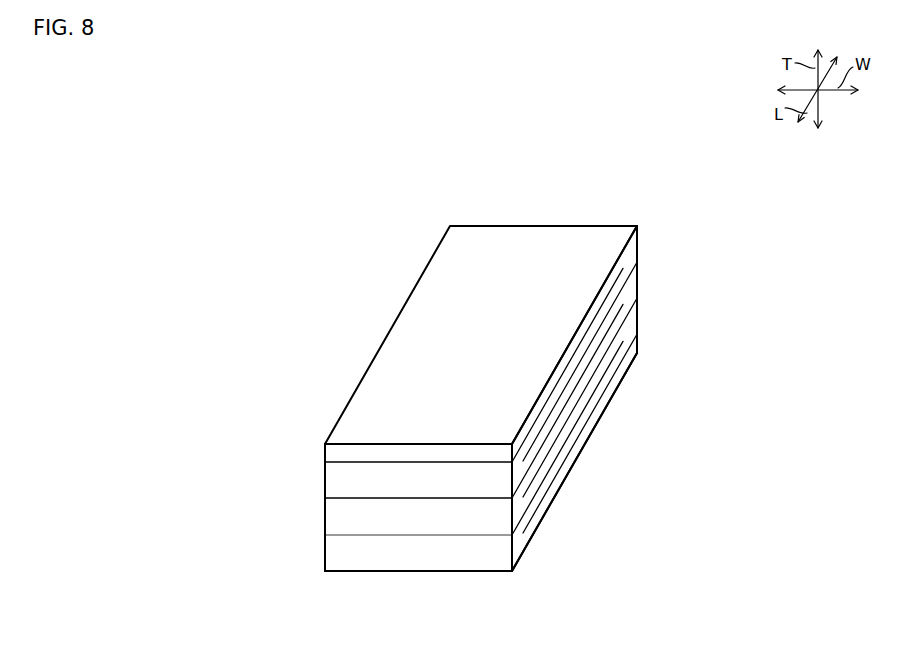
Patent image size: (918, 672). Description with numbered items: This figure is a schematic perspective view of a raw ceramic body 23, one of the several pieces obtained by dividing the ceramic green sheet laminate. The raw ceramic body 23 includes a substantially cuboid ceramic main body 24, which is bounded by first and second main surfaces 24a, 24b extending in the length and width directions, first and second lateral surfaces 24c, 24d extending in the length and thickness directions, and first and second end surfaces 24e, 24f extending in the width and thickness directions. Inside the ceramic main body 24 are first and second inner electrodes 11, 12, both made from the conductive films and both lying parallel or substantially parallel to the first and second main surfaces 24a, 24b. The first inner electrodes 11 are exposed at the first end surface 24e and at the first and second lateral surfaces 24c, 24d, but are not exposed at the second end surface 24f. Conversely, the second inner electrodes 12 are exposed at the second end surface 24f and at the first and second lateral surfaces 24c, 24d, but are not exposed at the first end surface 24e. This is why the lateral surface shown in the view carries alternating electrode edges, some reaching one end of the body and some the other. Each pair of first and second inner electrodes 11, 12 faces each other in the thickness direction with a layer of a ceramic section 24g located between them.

The raw ceramic body 23 is at (653, 188).
The ceramic main body 24 is at (557, 226).
The first main surface 24a is at (505, 245).
The second main surface 24b is at (455, 573).
The first lateral surface 24c is at (323, 482).
The second lateral surface 24d is at (518, 538).
The first end surface 24e is at (387, 557).
The second end surface 24f is at (640, 250).
The ceramic section 24g is at (577, 432).
The first inner electrode 11 is at (605, 372).
The second inner electrode 12 is at (597, 409).